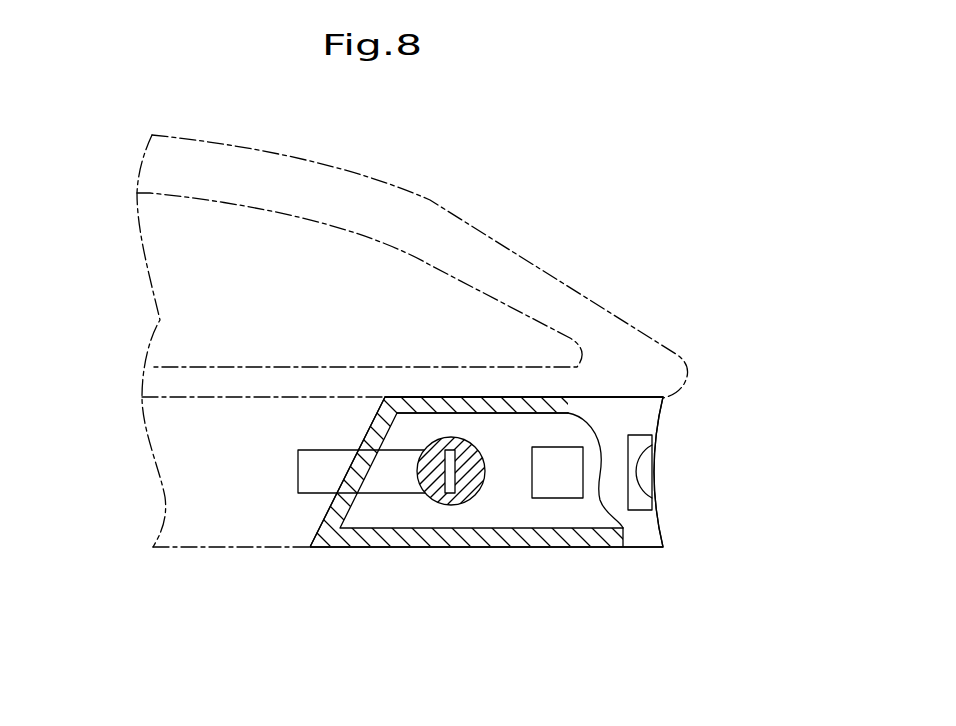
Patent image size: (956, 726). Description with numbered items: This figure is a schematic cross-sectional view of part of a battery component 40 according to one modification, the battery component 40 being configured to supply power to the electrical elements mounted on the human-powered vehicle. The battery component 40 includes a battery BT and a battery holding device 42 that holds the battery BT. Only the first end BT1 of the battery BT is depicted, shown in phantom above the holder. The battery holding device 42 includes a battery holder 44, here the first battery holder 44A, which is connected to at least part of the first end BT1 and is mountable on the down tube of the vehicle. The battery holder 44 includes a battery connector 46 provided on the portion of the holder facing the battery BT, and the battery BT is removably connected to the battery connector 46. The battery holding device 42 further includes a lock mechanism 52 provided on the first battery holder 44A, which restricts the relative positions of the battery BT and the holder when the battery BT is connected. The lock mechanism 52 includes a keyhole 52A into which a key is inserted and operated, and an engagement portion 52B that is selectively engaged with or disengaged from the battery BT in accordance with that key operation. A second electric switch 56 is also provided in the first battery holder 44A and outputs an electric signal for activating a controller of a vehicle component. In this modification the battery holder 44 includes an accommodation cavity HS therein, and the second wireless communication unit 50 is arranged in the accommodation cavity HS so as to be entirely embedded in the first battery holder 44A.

The battery BT is at (406, 141).
The first end BT1 is at (505, 252).
The battery component 40 is at (606, 147).
The battery holding device 42 is at (730, 271).
The battery holder 44 is at (486, 472).
The first battery holder 44A is at (685, 578).
The battery connector 46 is at (415, 397).
The second wireless communication unit 50 is at (570, 498).
The lock mechanism 52 is at (415, 516).
The keyhole 52A is at (450, 495).
The engagement portion 52B is at (298, 473).
The second electric switch 56 is at (653, 472).
The accommodation cavity HS is at (518, 532).